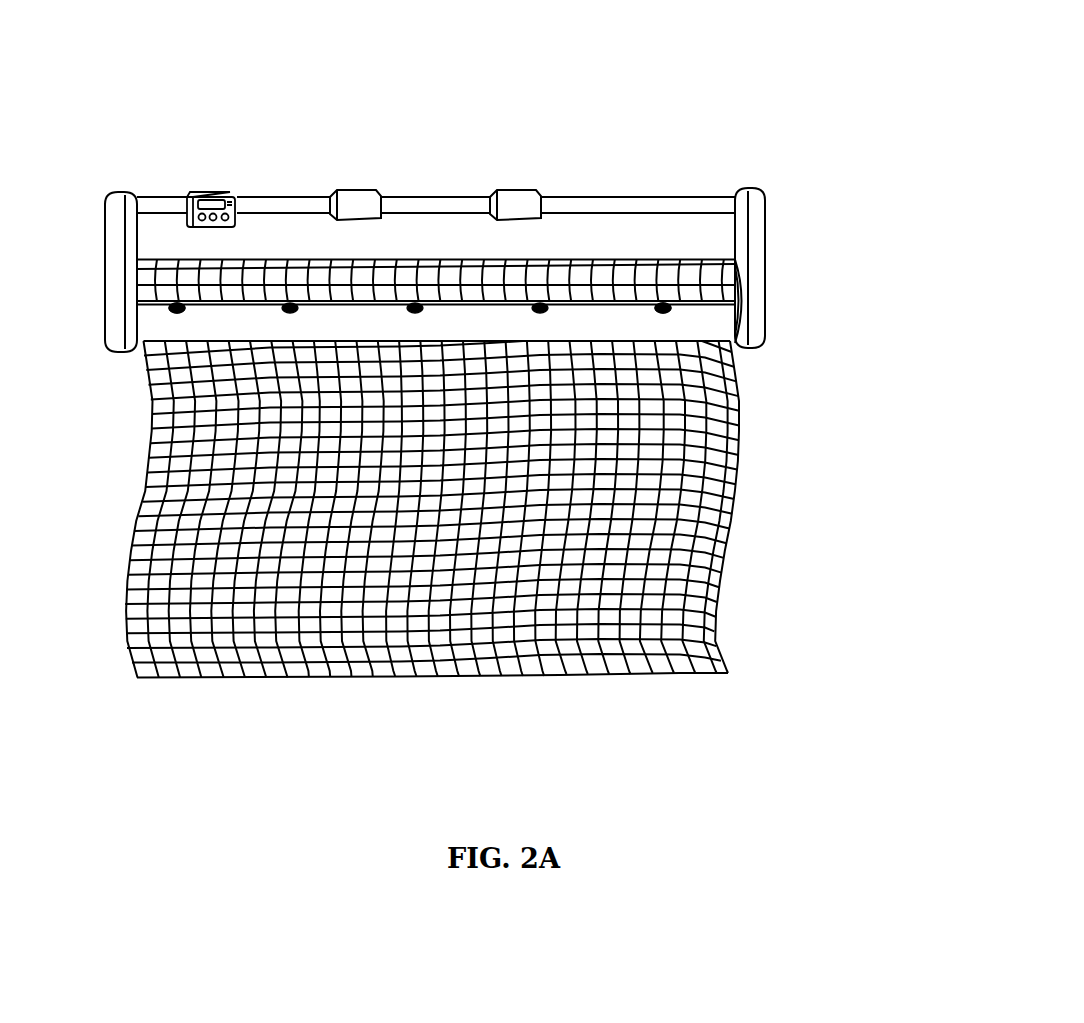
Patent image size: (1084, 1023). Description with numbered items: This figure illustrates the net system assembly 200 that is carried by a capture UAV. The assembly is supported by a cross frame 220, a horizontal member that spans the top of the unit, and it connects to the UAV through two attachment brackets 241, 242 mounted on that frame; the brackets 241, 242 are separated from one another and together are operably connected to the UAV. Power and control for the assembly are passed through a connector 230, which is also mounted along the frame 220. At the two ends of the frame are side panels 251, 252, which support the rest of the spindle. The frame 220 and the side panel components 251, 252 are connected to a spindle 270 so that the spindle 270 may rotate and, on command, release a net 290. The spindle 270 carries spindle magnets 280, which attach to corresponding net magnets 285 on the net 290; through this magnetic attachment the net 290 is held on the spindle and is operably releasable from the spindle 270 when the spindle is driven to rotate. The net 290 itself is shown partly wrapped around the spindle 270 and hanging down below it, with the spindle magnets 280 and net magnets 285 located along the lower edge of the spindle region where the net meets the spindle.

The net system assembly 200 is at (268, 128).
The cross frame 220 is at (612, 202).
The connector 230 is at (213, 190).
The attachment bracket 241 is at (511, 192).
The attachment bracket 242 is at (363, 192).
The side panel 251 is at (112, 231).
The side panel 252 is at (758, 222).
The spindle 270 is at (159, 321).
The spindle magnets 280 is at (674, 308).
The net magnets 285 is at (674, 308).
The net 290 is at (717, 278).